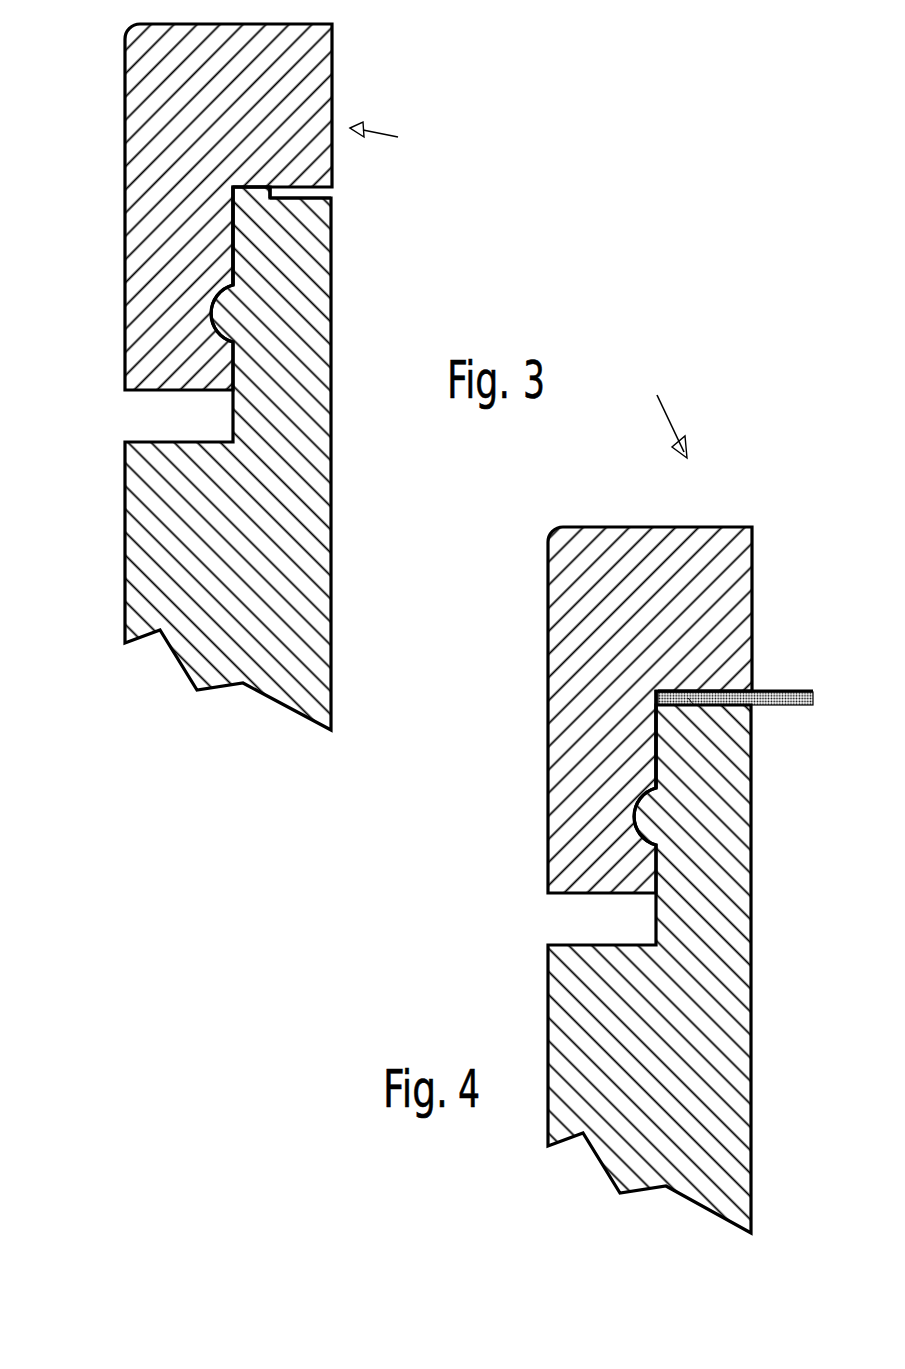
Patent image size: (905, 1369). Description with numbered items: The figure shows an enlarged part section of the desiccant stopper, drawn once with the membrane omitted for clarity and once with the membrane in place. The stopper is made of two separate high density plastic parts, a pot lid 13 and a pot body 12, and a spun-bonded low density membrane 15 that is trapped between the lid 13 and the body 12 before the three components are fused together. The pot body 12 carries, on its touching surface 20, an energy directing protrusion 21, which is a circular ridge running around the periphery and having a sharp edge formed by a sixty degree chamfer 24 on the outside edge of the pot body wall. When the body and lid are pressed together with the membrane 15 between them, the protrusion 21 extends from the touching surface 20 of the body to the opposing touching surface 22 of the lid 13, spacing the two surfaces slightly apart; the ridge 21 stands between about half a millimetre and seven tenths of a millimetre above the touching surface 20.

In FIG. 3, the pot body 12 is at (315, 556).
In FIG. 4, the pot body 12 is at (562, 1001).
In FIG. 3, the pot lid 13 is at (158, 288).
In FIG. 4, the pot lid 13 is at (557, 687).
In FIG. 4, the membrane 15 is at (783, 690).
In FIG. 3, the touching surface 20 is at (293, 200).
In FIG. 3, the energy directing protrusion 21 is at (270, 185).
In FIG. 4, the energy directing protrusion 21 is at (688, 698).
In FIG. 3, the touching surface of the lid 22 is at (252, 184).
In FIG. 3, the chamfer 24 is at (264, 188).
In FIG. 4, the chamfer 24 is at (688, 698).